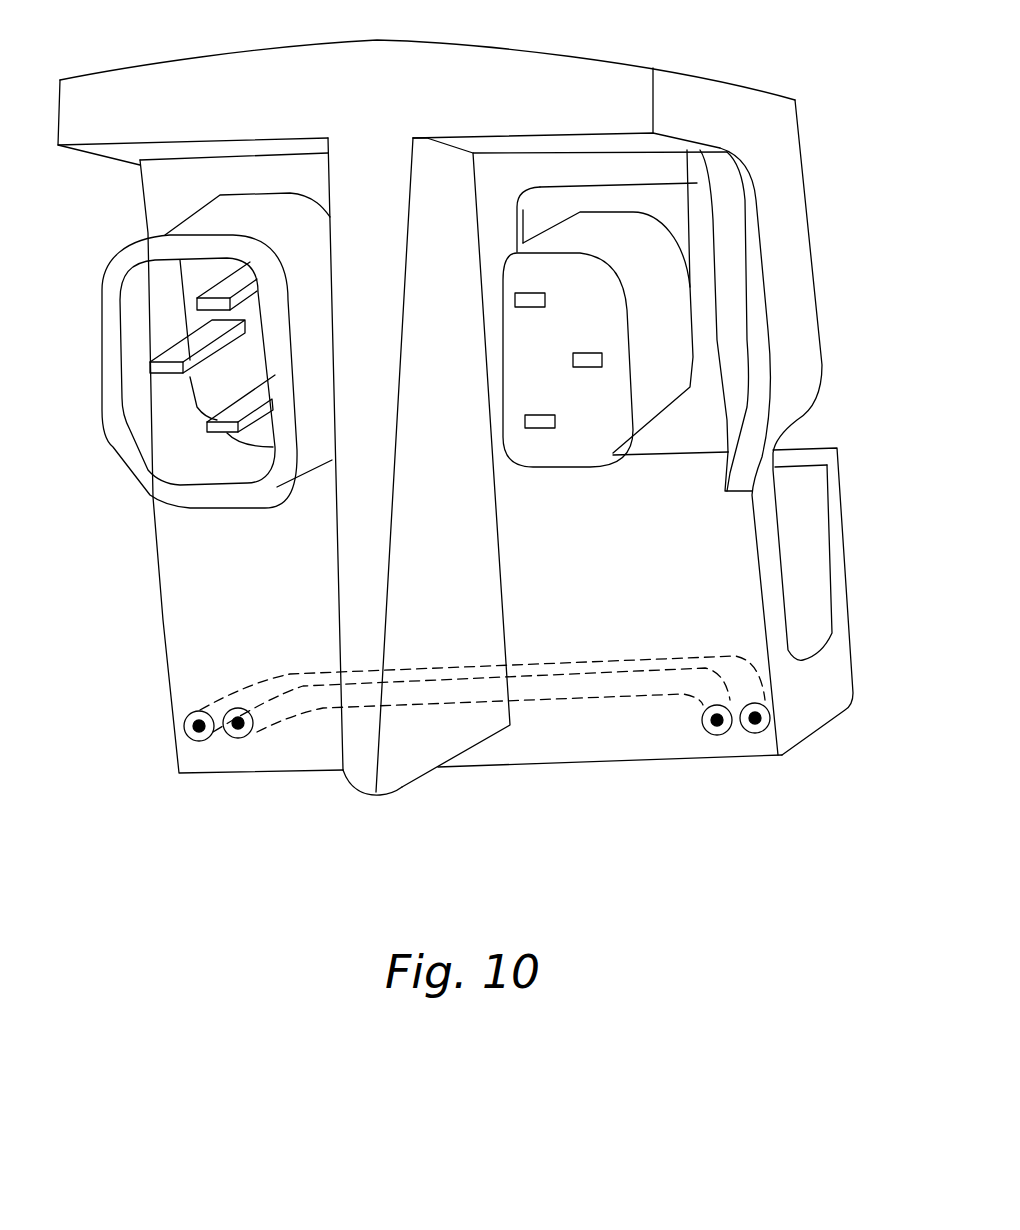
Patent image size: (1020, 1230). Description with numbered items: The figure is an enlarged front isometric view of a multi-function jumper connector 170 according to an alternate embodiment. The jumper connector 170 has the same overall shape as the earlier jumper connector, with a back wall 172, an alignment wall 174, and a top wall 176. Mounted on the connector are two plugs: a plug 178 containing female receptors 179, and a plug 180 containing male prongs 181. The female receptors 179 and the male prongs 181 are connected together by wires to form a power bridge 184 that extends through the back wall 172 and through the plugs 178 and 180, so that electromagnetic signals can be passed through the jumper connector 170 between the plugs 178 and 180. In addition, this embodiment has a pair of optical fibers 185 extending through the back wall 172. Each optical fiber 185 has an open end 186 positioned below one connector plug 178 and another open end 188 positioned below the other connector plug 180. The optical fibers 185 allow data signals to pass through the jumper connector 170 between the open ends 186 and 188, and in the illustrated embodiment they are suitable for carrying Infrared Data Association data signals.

The multi-function jumper connector 170 is at (826, 162).
The back wall 172 is at (812, 313).
The alignment wall 174 is at (483, 557).
The top wall 176 is at (512, 63).
The plug 178 is at (672, 333).
The female receptors 179 is at (542, 430).
The plug 180 is at (103, 400).
The male prongs 181 is at (150, 368).
The power bridge 184 is at (170, 305).
The optical fibers 185 is at (790, 713).
The open end 186 is at (715, 736).
The open end 188 is at (198, 741).